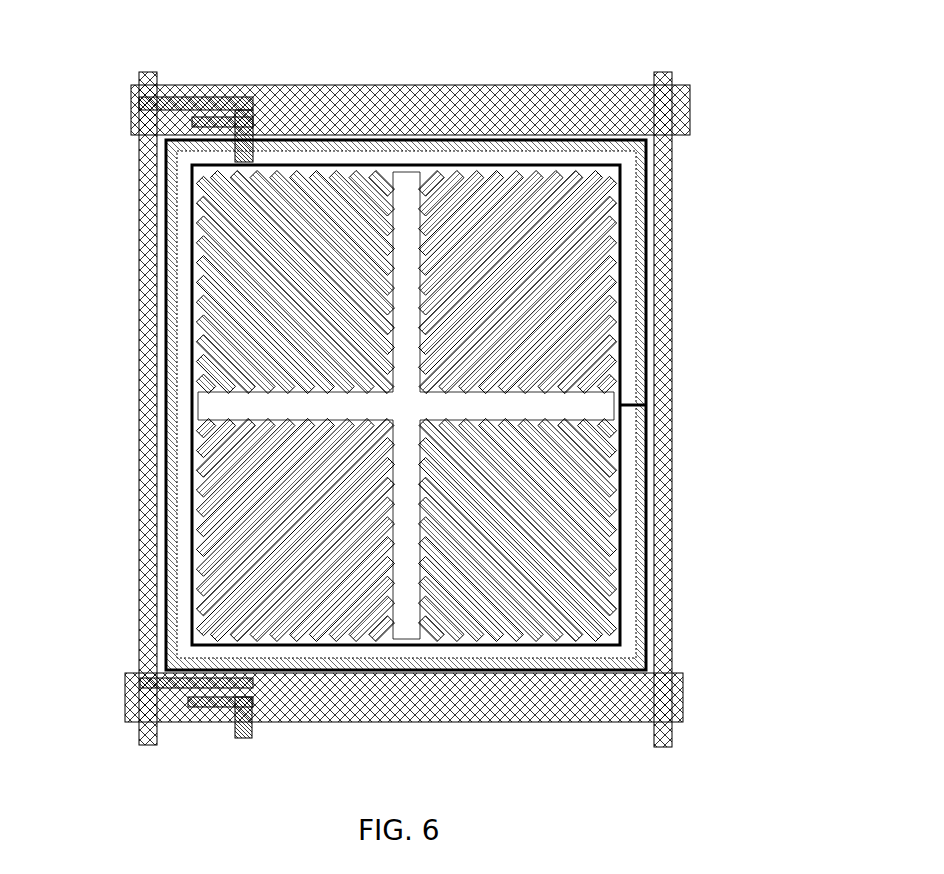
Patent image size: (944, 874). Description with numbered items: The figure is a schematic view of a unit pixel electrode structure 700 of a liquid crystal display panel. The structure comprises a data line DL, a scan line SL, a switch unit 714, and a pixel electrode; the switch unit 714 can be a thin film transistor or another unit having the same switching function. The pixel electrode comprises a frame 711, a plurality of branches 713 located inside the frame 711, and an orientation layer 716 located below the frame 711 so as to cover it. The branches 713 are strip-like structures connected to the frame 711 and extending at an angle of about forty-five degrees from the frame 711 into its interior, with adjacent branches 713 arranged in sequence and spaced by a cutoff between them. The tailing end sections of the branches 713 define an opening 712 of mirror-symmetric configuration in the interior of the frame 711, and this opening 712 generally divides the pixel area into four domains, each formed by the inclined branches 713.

The unit pixel electrode structure 700 is at (707, 144).
The frame 711 is at (613, 385).
The opening 712 is at (222, 410).
The branches 713 is at (560, 255).
The switch unit 714 is at (250, 112).
The orientation layer 716 is at (645, 545).
The scan line SL is at (493, 92).
The data line DL is at (140, 327).